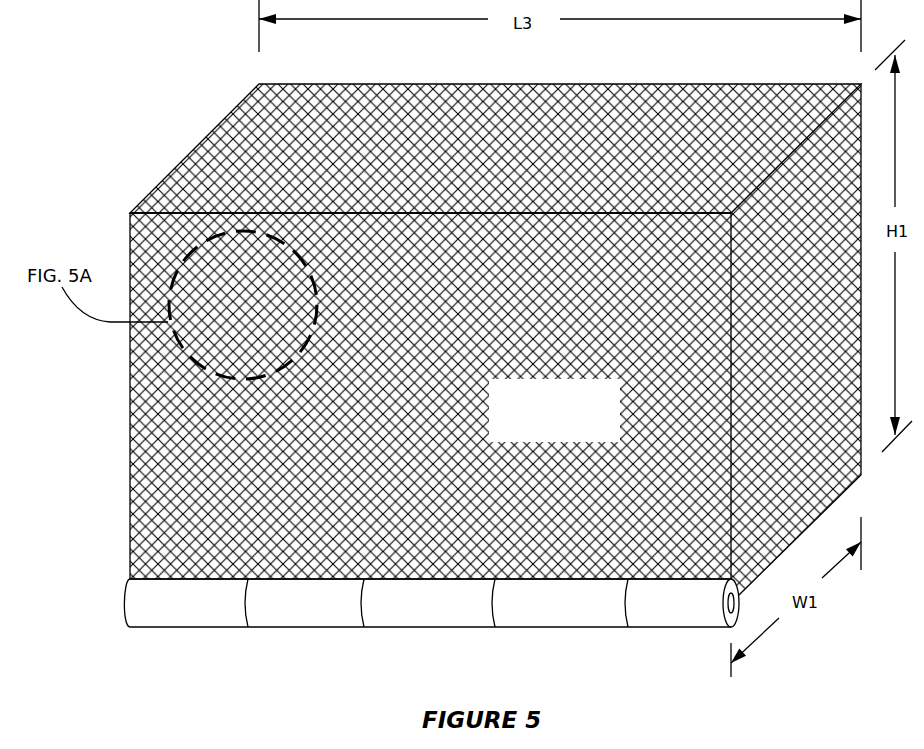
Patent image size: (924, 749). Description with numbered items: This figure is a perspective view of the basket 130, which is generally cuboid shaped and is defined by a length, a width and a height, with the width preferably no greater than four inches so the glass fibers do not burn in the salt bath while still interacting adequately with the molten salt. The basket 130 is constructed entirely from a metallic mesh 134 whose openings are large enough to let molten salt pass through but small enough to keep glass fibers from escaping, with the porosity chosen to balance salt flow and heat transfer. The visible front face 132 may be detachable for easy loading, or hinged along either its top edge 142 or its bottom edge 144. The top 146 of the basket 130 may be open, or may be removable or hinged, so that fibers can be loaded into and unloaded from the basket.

The basket 130 is at (454, 312).
The front face 132 is at (541, 421).
The mesh 134 is at (143, 438).
The top edge 142 is at (153, 213).
The bottom edge 144 is at (123, 612).
The top 146 is at (176, 188).